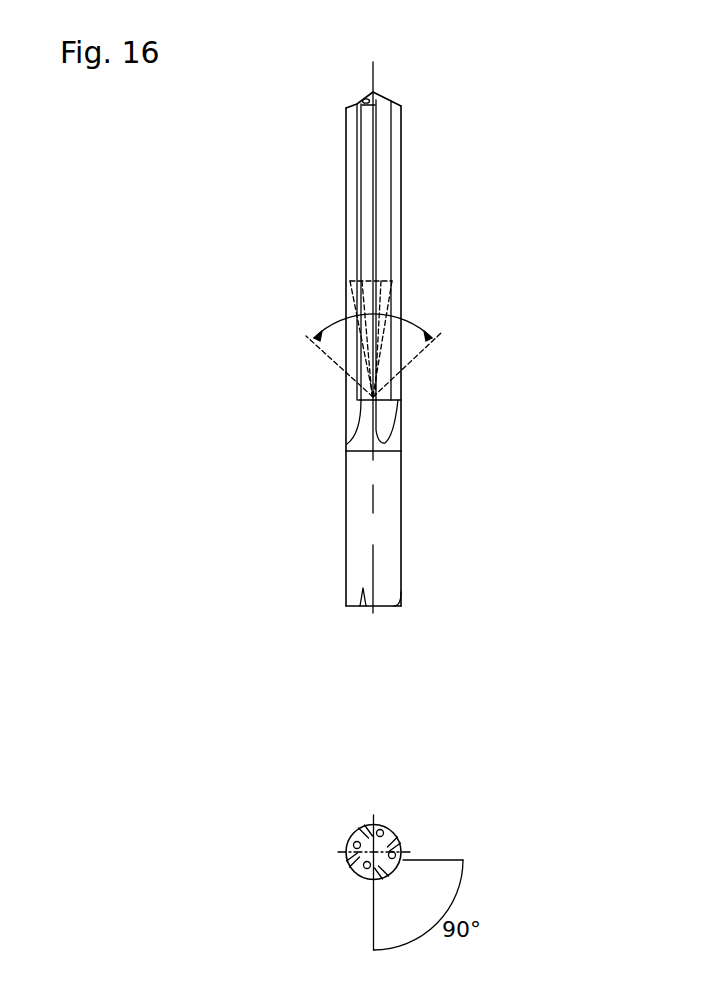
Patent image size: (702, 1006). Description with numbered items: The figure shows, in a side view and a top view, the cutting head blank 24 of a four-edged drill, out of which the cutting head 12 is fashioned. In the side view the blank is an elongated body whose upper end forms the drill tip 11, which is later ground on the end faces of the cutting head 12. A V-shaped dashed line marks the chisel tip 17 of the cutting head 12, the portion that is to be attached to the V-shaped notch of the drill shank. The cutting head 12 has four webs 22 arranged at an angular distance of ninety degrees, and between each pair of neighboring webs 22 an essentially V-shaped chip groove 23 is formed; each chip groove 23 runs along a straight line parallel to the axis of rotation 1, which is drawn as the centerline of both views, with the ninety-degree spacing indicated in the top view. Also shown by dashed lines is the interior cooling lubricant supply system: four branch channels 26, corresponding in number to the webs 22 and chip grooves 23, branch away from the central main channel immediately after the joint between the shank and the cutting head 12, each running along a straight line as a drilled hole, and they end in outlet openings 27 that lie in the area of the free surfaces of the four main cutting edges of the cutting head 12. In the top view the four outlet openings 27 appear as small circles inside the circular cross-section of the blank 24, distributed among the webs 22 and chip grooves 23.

The axis of rotation 1 is at (380, 558).
The drill tip 11 is at (400, 103).
The cutting head 12 is at (405, 192).
The chisel tip 17 is at (405, 368).
The web 22 is at (355, 133).
The chip groove 23 is at (345, 168).
The cutting head blank 24 is at (324, 476).
The branch channel 26 is at (352, 292).
The outlet opening 27 is at (362, 100).